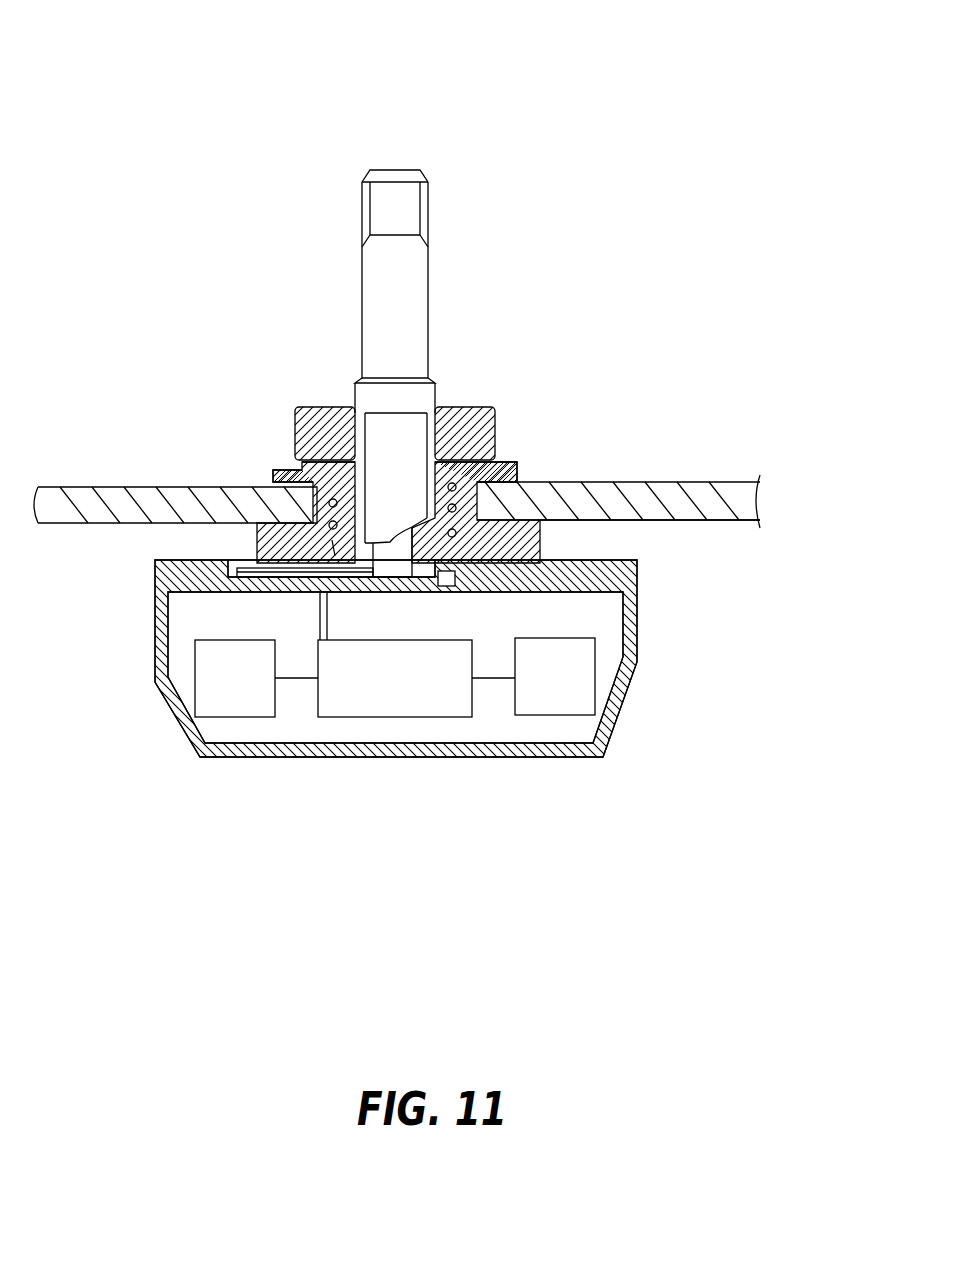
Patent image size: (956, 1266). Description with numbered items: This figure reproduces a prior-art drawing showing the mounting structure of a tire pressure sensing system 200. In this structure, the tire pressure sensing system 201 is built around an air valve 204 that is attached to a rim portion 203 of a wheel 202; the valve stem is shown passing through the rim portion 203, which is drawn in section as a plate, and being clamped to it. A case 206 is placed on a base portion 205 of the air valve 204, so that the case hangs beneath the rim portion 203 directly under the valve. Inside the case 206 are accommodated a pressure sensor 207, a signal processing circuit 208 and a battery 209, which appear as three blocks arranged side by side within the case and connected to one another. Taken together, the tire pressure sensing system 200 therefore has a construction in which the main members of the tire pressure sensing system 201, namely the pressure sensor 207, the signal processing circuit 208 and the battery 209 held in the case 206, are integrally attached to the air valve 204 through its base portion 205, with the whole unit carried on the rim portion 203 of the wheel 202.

The mounting structure of a tire pressure sensing system 200 is at (240, 135).
The tire pressure sensing system 201 is at (588, 527).
The wheel 202 is at (692, 548).
The rim portion 203 is at (728, 522).
The air valve 204 is at (428, 275).
The base portion 205 is at (277, 533).
The case 206 is at (178, 730).
The pressure sensor 207 is at (240, 700).
The signal processing circuit 208 is at (388, 698).
The battery 209 is at (557, 688).